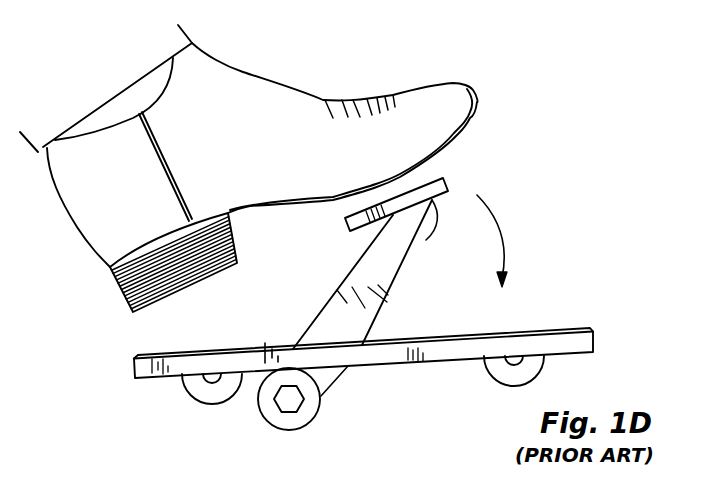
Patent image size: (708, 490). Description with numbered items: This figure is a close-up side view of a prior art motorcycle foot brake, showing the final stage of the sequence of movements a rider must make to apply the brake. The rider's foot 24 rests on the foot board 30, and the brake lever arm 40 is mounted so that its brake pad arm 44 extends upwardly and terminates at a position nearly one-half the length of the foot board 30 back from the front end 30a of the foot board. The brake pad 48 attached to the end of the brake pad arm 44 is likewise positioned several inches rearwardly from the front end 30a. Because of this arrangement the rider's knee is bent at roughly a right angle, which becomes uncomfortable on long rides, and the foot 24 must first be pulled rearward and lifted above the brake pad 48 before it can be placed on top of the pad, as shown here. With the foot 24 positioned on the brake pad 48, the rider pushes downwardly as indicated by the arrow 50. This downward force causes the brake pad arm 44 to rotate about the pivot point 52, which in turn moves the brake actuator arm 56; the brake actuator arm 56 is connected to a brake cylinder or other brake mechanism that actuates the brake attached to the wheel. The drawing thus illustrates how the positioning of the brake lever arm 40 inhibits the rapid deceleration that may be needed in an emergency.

The rider's foot 24 is at (230, 82).
The brake pad 48 is at (445, 184).
The brake lever arm 40 is at (394, 278).
The brake pad arm 44 is at (414, 233).
The arrow 50 is at (503, 232).
The front end 30a is at (593, 343).
The foot board 30 is at (508, 377).
The brake actuator arm 56 is at (267, 355).
The pivot point 52 is at (300, 417).